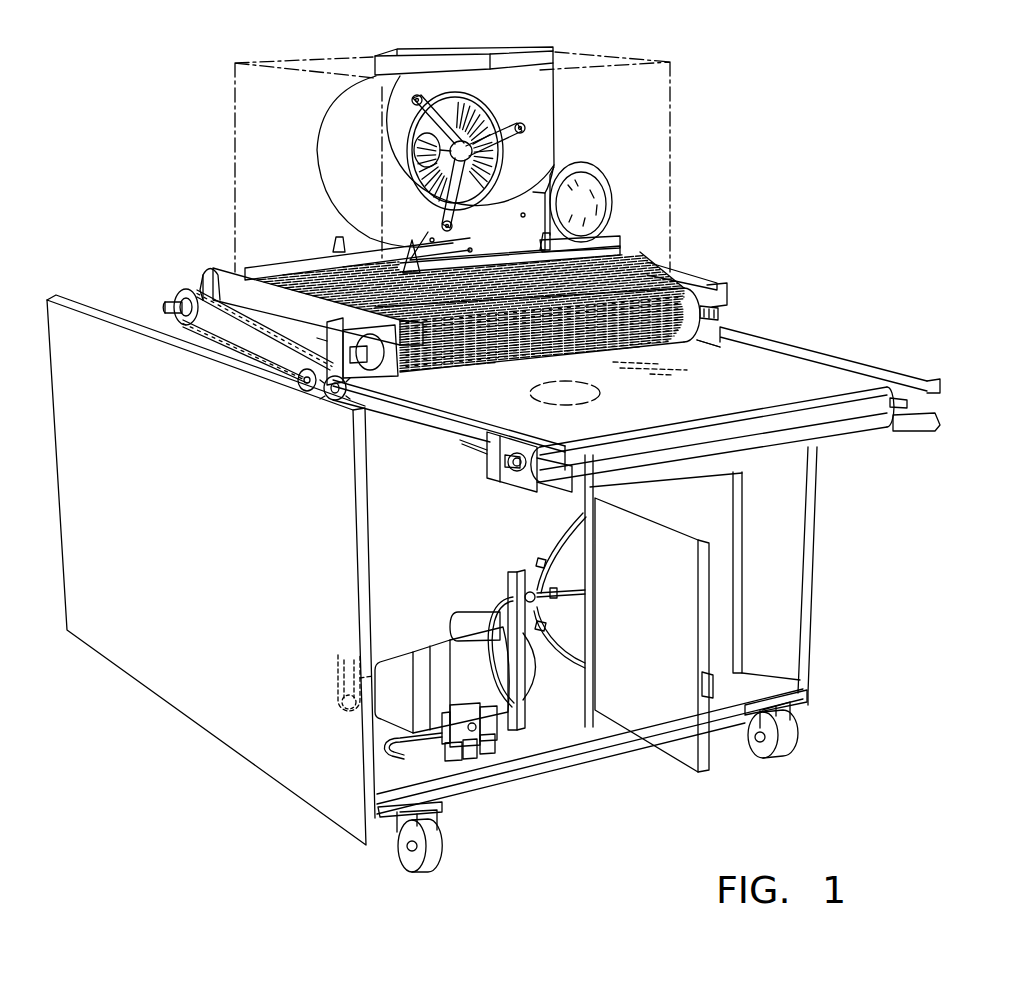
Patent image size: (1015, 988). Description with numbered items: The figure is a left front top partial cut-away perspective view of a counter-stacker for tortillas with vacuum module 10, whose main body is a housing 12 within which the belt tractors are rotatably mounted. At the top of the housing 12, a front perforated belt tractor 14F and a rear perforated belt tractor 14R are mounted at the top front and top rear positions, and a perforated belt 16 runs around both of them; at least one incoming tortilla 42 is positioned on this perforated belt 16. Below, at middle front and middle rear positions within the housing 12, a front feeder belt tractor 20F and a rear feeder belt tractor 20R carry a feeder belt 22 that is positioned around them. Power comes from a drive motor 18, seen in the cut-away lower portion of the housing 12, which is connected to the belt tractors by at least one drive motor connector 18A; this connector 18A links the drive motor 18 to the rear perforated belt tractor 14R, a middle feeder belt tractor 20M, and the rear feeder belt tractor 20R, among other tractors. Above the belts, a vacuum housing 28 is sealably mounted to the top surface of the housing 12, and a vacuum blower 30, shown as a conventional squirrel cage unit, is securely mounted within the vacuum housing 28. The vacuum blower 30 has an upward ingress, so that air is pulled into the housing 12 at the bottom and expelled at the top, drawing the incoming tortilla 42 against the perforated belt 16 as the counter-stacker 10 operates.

The counter-stacker for tortillas with vacuum module 10 is at (367, 41).
The housing 12 is at (693, 287).
The front perforated belt tractor 14F is at (713, 315).
The rear perforated belt tractor 14R is at (172, 305).
The perforated belt 16 is at (693, 295).
The drive motor 18 is at (397, 667).
The drive motor connector 18A is at (216, 290).
The front feeder belt tractor 20F is at (522, 470).
The middle feeder belt tractor 20M is at (330, 388).
The rear feeder belt tractor 20R is at (303, 380).
The feeder belt 22 is at (797, 380).
The vacuum housing 28 is at (672, 84).
The vacuum blower 30 is at (556, 58).
The incoming tortilla 42 is at (598, 395).